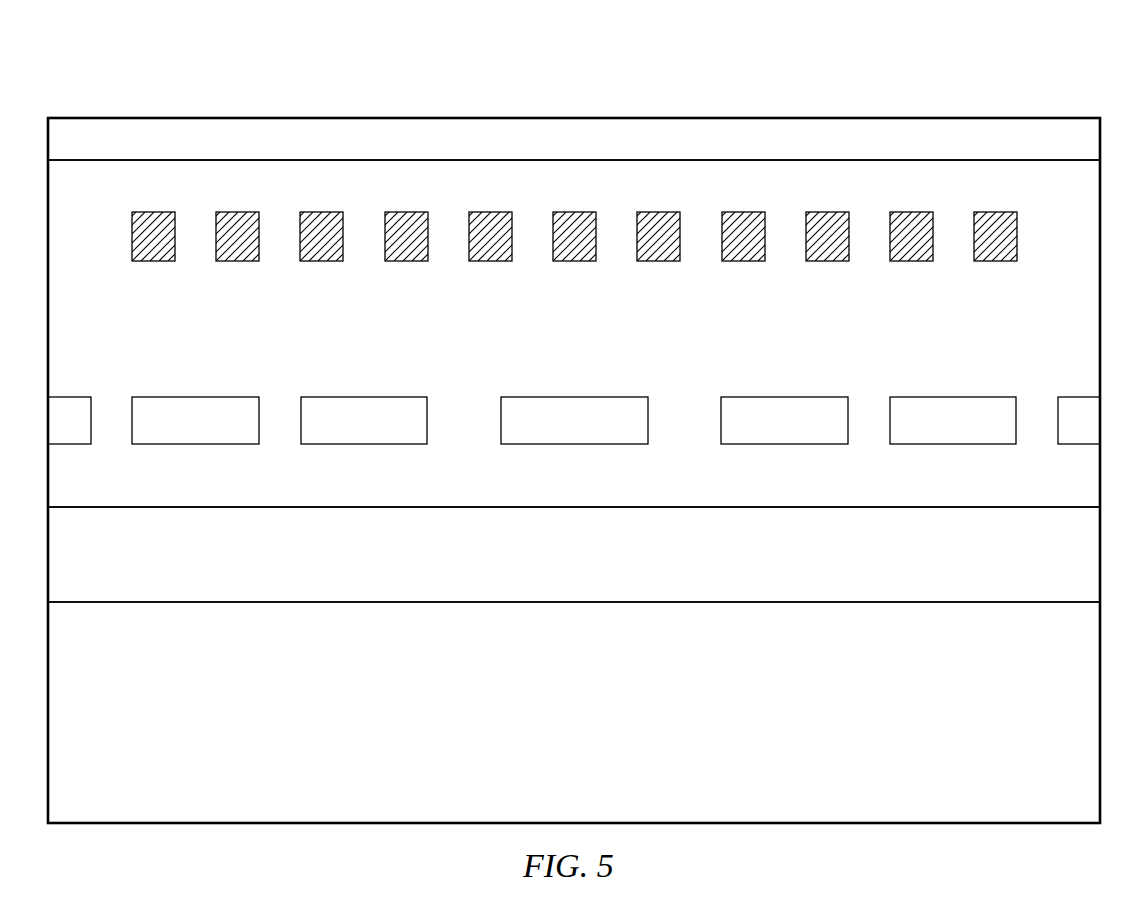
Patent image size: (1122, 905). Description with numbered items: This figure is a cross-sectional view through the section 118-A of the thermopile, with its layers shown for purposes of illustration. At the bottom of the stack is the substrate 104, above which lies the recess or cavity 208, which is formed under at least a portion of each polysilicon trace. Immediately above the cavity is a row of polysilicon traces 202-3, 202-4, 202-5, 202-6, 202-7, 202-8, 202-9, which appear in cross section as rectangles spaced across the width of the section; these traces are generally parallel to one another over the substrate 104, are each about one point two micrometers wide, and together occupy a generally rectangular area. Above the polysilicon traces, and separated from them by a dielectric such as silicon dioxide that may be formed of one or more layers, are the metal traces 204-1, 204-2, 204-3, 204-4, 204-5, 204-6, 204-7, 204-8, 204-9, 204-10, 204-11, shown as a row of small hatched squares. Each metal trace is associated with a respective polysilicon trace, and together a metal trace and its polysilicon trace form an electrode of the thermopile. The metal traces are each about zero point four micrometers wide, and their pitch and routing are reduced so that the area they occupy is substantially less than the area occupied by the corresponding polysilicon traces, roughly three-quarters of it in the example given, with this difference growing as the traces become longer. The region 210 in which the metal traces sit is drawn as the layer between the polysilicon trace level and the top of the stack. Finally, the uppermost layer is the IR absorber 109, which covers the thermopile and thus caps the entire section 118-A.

The section 118-A is at (735, 92).
The IR absorber 109 is at (532, 125).
The dielectric layer 210 is at (592, 377).
The recess or cavity 208 is at (592, 568).
The substrate 104 is at (592, 726).
The metal trace 204-1 is at (995, 261).
The metal trace 204-2 is at (910, 261).
The metal trace 204-3 is at (827, 261).
The metal trace 204-4 is at (742, 261).
The metal trace 204-5 is at (658, 261).
The metal trace 204-6 is at (575, 261).
The metal trace 204-7 is at (490, 261).
The metal trace 204-8 is at (405, 261).
The metal trace 204-9 is at (322, 261).
The metal trace 204-10 is at (238, 261).
The metal trace 204-11 is at (153, 261).
The polysilicon trace 202-3 is at (1075, 397).
The polysilicon trace 202-4 is at (953, 444).
The polysilicon trace 202-5 is at (785, 444).
The polysilicon trace 202-6 is at (573, 444).
The polysilicon trace 202-7 is at (365, 444).
The polysilicon trace 202-8 is at (195, 444).
The polysilicon trace 202-9 is at (75, 397).